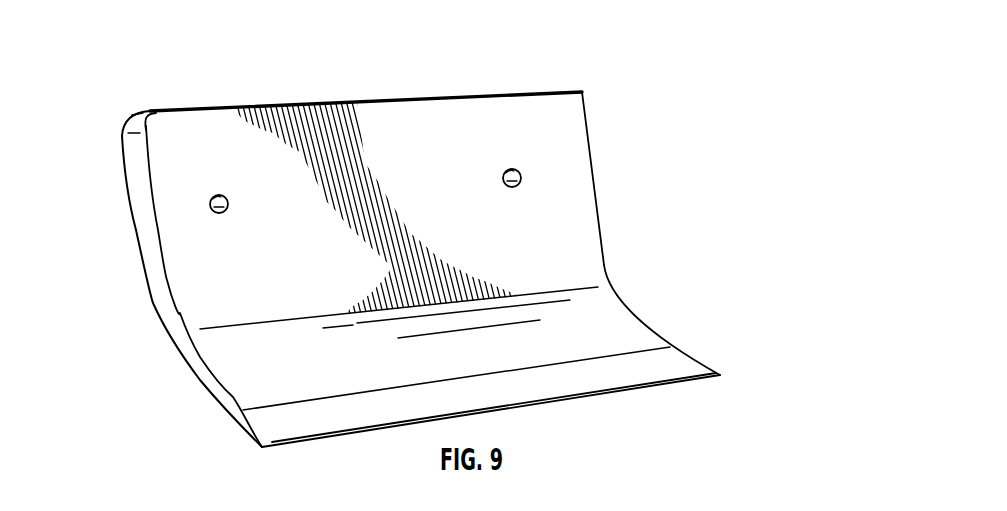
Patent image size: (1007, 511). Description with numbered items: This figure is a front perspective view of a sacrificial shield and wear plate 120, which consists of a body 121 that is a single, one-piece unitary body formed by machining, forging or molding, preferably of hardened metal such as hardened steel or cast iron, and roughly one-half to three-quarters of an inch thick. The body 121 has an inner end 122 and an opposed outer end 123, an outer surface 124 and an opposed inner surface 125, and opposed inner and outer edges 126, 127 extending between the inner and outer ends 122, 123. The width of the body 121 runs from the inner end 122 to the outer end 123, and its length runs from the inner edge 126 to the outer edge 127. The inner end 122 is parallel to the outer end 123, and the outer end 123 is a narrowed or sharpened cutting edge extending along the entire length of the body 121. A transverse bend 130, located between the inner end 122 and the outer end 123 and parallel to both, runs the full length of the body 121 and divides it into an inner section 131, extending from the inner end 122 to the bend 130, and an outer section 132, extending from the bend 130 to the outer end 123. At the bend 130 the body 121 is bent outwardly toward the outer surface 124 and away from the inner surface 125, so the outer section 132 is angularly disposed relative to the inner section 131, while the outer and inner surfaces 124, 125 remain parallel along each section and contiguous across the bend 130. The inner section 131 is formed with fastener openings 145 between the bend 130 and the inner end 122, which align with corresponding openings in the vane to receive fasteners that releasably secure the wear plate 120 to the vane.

The wear plate 120 is at (382, 250).
The body 121 is at (583, 141).
The inner end 122 is at (407, 113).
The outer end 123 is at (605, 395).
The outer surface 124 is at (447, 207).
The inner surface 125 is at (130, 190).
The inner edge 126 is at (597, 195).
The outer edge 127 is at (147, 249).
The transverse bend 130 is at (278, 322).
The inner section 131 is at (298, 175).
The outer section 132 is at (275, 373).
The fastener openings 145 is at (219, 195).